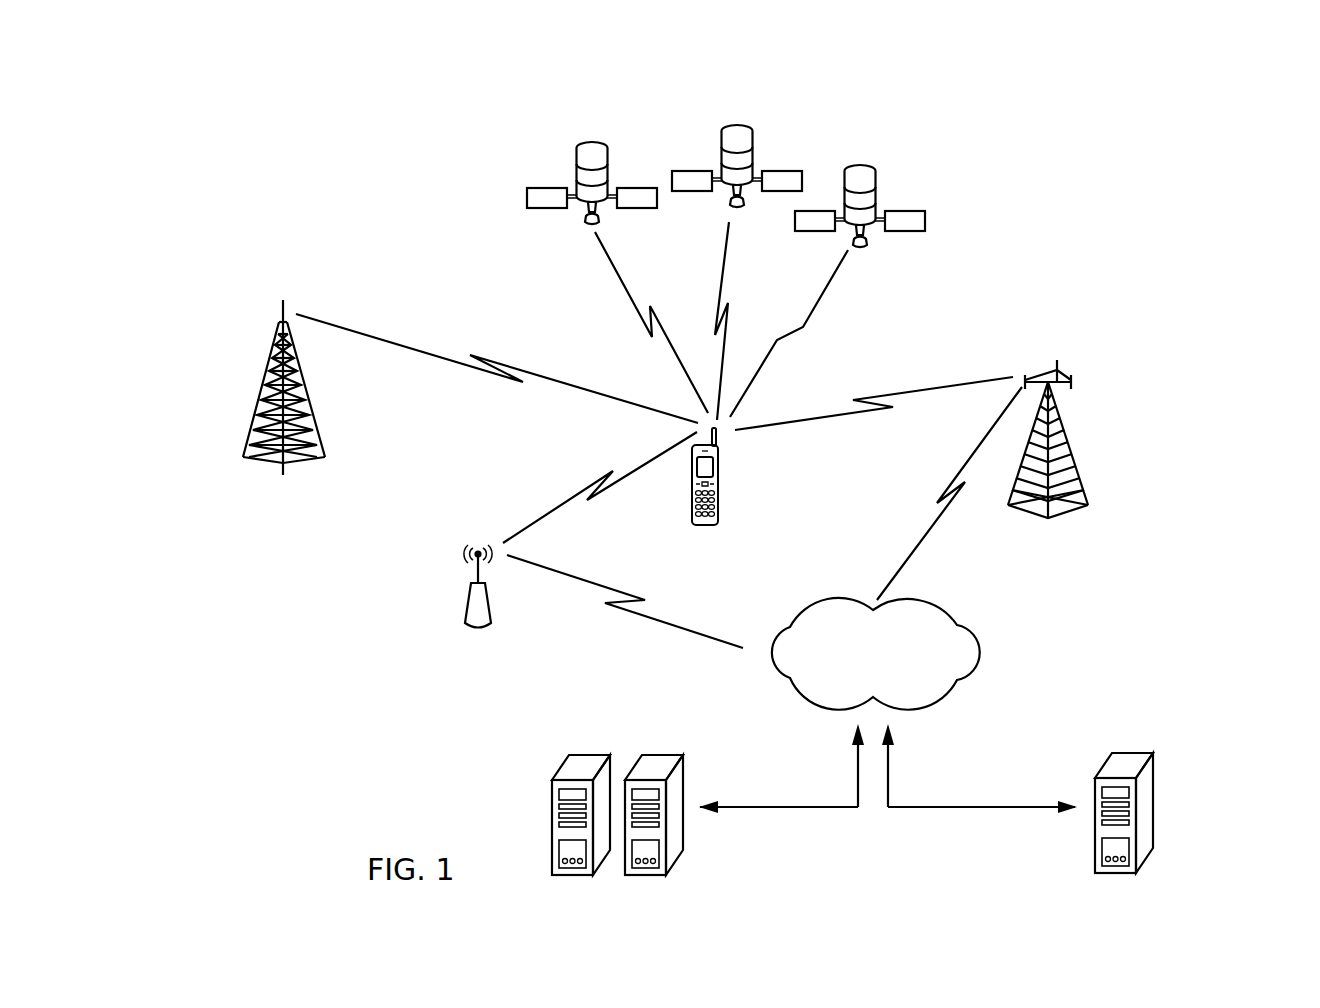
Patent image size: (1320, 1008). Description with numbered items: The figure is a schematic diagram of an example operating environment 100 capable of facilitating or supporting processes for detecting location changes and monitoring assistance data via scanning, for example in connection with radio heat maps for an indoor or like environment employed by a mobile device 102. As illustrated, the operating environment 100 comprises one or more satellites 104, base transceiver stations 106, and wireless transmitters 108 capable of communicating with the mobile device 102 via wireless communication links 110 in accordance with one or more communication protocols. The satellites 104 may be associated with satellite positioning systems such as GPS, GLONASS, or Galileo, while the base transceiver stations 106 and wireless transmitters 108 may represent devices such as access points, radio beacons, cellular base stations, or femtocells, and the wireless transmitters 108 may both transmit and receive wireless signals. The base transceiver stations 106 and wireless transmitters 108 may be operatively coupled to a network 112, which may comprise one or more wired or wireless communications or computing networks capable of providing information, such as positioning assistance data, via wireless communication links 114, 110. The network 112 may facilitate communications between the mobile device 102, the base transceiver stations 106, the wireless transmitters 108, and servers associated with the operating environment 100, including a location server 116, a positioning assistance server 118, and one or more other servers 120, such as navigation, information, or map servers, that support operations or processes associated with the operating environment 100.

The operating environment 100 is at (1131, 173).
The mobile device 102 is at (720, 480).
The satellites 104 is at (592, 142).
The base transceiver stations 106 is at (273, 376).
The wireless transmitters 108 is at (470, 600).
The wireless communication links 110 is at (622, 283).
The network 112 is at (990, 650).
The wireless communication links 114 is at (932, 537).
The location server 116 is at (589, 755).
The positioning assistance server 118 is at (658, 755).
The other servers 120 is at (1184, 814).